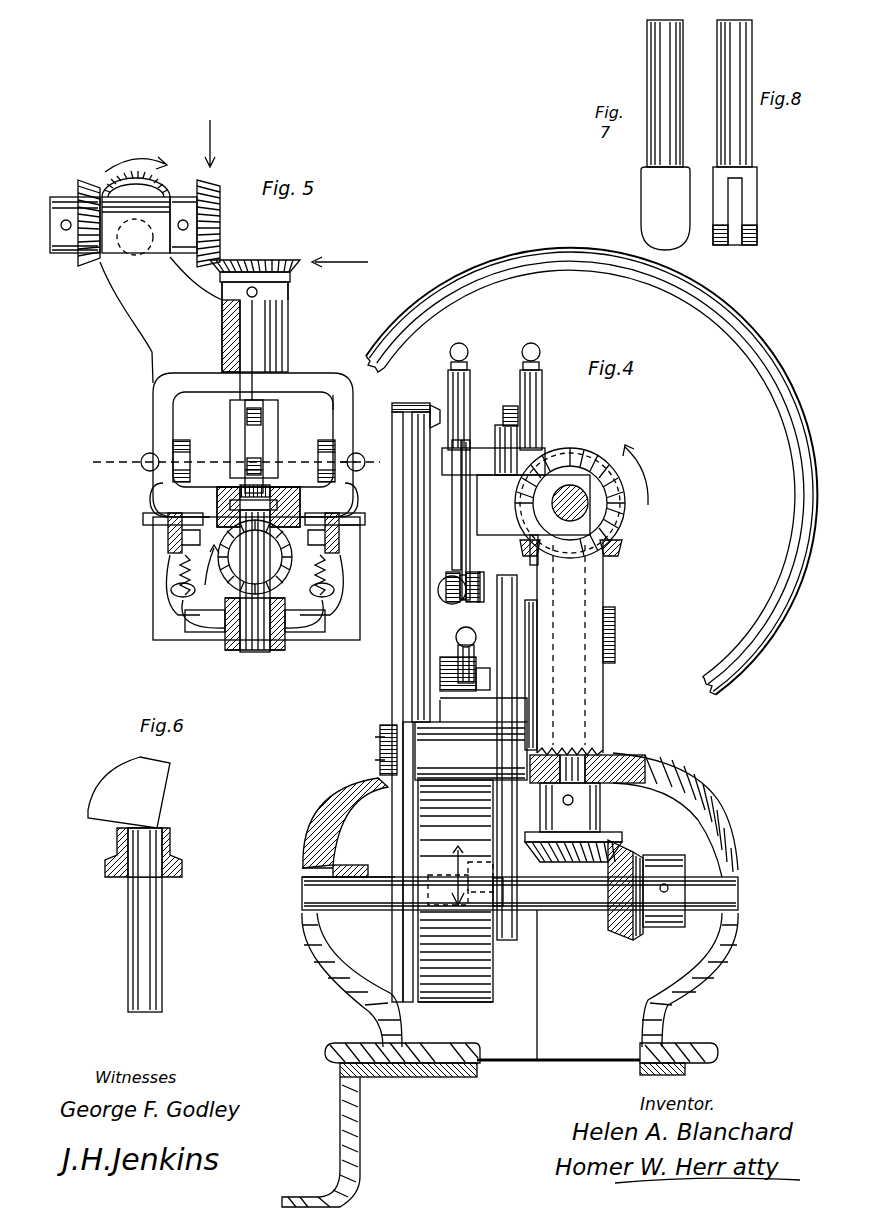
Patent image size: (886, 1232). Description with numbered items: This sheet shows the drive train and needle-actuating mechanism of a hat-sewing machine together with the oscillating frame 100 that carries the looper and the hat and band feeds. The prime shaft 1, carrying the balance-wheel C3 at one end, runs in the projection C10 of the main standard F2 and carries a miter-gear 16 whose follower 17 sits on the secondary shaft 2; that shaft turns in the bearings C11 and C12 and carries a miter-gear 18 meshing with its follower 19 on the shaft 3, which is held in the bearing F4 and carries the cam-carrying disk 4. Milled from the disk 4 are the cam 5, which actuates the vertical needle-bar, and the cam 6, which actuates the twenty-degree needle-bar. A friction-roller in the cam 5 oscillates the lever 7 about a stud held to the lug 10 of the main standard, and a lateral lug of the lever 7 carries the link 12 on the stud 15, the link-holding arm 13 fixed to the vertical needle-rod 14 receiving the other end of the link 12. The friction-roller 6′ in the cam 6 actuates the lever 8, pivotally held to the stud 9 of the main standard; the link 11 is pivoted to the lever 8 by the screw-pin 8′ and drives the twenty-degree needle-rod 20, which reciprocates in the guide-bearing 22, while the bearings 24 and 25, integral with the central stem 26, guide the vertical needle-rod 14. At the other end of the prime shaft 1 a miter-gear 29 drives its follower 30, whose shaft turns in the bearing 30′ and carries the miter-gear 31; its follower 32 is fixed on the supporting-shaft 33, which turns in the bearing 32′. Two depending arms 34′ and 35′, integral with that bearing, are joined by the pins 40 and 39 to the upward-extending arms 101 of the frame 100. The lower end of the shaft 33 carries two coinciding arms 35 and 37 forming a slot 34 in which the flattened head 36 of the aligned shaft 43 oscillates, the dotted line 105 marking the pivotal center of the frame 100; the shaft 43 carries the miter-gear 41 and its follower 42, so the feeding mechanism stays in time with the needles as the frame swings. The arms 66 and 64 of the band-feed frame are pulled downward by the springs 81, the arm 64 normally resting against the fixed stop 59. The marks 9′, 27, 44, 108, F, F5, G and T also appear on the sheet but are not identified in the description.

In FIG. 5, the prime shaft 1 is at (138, 232).
In FIG. 4, the secondary shaft 2 is at (587, 769).
In FIG. 4, the shaft 3 is at (578, 912).
In FIG. 4, the cam-carrying disk 4 is at (457, 1002).
In FIG. 4, the cam 5 is at (502, 919).
In FIG. 4, the cam 6 is at (418, 955).
In FIG. 4, the friction-roller 6′ is at (425, 898).
In FIG. 4, the lever 7 is at (507, 757).
In FIG. 4, the lever 8 is at (392, 835).
In FIG. 4, the screw-pin 8′ is at (434, 406).
In FIG. 4, the stud 9 is at (471, 751).
In FIG. 4, the cylinder stop 9′ is at (380, 768).
In FIG. 4, the lug 10 is at (540, 684).
In FIG. 4, the link 11 is at (430, 602).
In FIG. 4, the link 12 is at (462, 618).
In FIG. 4, the link-holding arm 13 is at (452, 590).
In FIG. 4, the vertical needle-rod 14 is at (470, 388).
In FIG. 4, the stud 15 is at (542, 420).
In FIG. 4, the miter-gear 16 is at (622, 517).
In FIG. 4, the follower 17 is at (620, 547).
In FIG. 4, the miter-gear 18 is at (605, 836).
In FIG. 4, the follower 19 is at (636, 858).
In FIG. 4, the twenty-degree needle-rod 20 is at (440, 672).
In FIG. 4, the guide-bearing 22 is at (440, 680).
In FIG. 4, the guiding and retaining bearing 24 is at (478, 448).
In FIG. 4, the guiding and retaining bearing 25 is at (474, 651).
In FIG. 4, the central stem 26 is at (515, 550).
In FIG. 4, the collar 27 is at (503, 414).
In FIG. 5, the miter-gear 29 is at (160, 190).
In FIG. 5, the follower 30 is at (83, 178).
In FIG. 5, the bearing 30′ is at (135, 242).
In FIG. 5, the miter-gear 31 is at (222, 211).
In FIG. 5, the follower 32 is at (252, 262).
In FIG. 5, the bearing 32′ is at (288, 322).
In FIG. 5, the supporting-shaft 33 is at (252, 338).
In FIG. 7, the supporting-shaft 33 is at (683, 90).
In FIG. 8, the supporting-shaft 33 is at (752, 62).
In FIG. 5, the slot 34 is at (248, 413).
In FIG. 8, the slot 34 is at (736, 245).
In FIG. 5, the depending arm 34′ is at (153, 398).
In FIG. 5, the arm 35 is at (278, 414).
In FIG. 5, the depending arm 35′ is at (348, 410).
In FIG. 5, the flattened head 36 is at (258, 447).
In FIG. 6, the flattened head 36 is at (150, 792).
In FIG. 7, the flattened head 36 is at (665, 208).
In FIG. 8, the flattened head 36 is at (758, 210).
In FIG. 5, the arm 37 is at (232, 450).
In FIG. 8, the arm 37 is at (716, 240).
In FIG. 5, the pin 39 is at (352, 457).
In FIG. 5, the pin 40 is at (148, 470).
In FIG. 5, the miter-gear 41 is at (272, 492).
In FIG. 6, the miter-gear 41 is at (168, 848).
In FIG. 5, the follower 42 is at (290, 553).
In FIG. 5, the shaft 43 is at (250, 652).
In FIG. 6, the shaft 43 is at (160, 930).
In FIG. 5, the hub 44 is at (232, 487).
In FIG. 5, the fixed stop 59 is at (360, 479).
In FIG. 5, the arm 64 is at (340, 533).
In FIG. 5, the arm 66 is at (168, 533).
In FIG. 5, the spring 81 is at (185, 568).
In FIG. 5, the frame 100 is at (340, 497).
In FIG. 5, the upward-extending arm 101 is at (178, 455).
In FIG. 5, the dotted line 105 is at (212, 462).
In FIG. 5, the bushing 108 is at (224, 646).
In FIG. 4, the balance-wheel C3 is at (795, 478).
In FIG. 4, the projection C10 is at (575, 493).
In FIG. 4, the bearing C11 is at (616, 622).
In FIG. 4, the bearing C12 is at (610, 740).
In FIG. 4, the casing frame F is at (715, 826).
In FIG. 4, the main standard F2 is at (560, 600).
In FIG. 4, the bearing F4 is at (345, 862).
In FIG. 4, the frame bearing F5 is at (672, 925).
In FIG. 4, the base G is at (362, 1122).
In FIG. 5, the knurled nut T is at (357, 523).